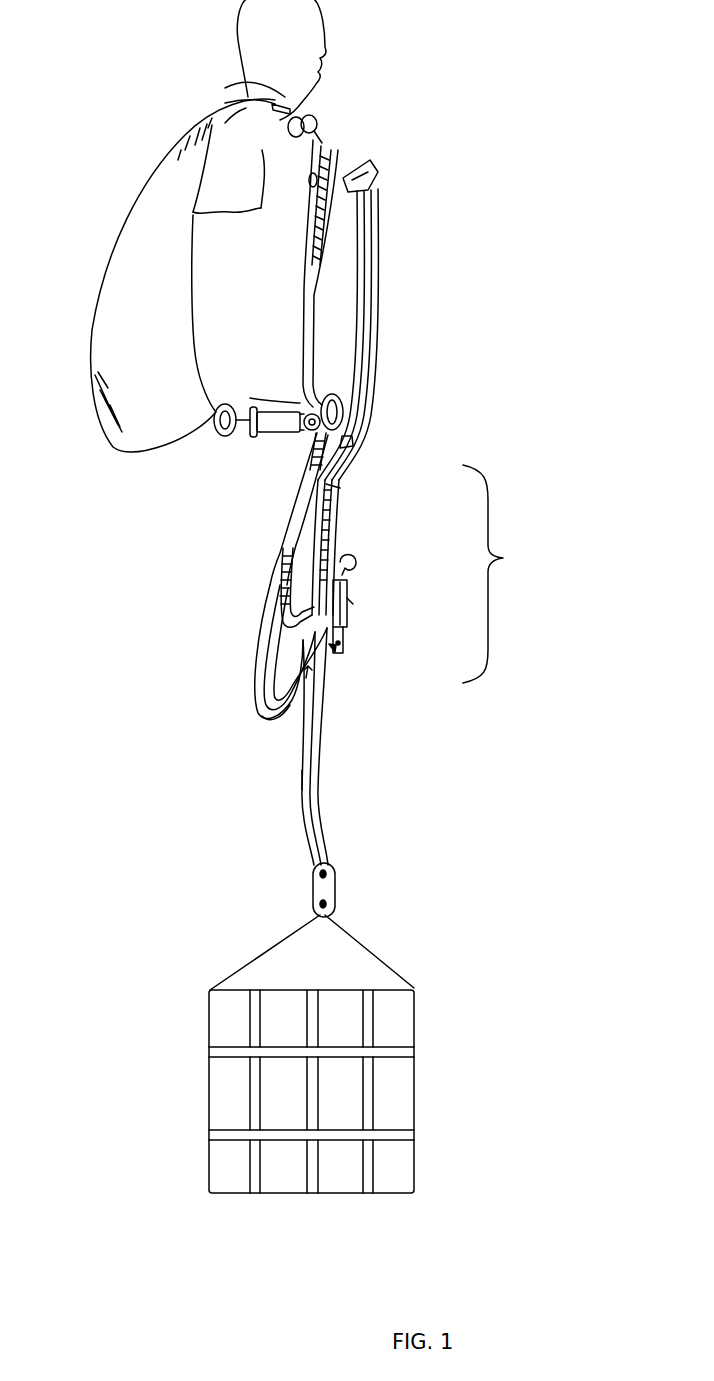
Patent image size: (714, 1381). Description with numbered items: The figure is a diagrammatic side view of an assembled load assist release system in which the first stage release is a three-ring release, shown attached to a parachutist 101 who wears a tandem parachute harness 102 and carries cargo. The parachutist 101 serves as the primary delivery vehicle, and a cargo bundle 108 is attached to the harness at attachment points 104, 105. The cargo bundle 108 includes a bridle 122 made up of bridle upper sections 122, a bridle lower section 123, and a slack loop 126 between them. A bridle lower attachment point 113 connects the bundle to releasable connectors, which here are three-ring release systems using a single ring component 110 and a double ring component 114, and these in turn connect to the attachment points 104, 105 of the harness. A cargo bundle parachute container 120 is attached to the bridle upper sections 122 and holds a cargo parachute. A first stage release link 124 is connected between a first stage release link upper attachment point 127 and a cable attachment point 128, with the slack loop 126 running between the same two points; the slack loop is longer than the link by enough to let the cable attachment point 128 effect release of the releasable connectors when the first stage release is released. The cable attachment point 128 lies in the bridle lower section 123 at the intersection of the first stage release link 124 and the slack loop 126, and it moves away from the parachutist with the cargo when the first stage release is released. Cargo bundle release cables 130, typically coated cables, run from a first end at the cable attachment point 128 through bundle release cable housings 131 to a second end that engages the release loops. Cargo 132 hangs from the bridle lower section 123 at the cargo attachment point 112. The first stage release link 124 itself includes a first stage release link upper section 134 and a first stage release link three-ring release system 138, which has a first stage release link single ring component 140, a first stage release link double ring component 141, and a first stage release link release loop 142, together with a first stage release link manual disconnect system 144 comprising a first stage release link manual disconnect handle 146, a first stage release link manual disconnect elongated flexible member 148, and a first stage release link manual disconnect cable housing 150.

The parachutist 101 is at (232, 33).
The tandem parachute harness 102 is at (92, 324).
The attachment point 104 is at (245, 82).
The attachment point 105 is at (215, 435).
The cargo bundle 108 is at (480, 145).
The single ring component 110 is at (322, 400).
The cargo attachment point 112 is at (337, 893).
The bridle lower attachment point 113 is at (315, 180).
The double ring component 114 is at (250, 398).
The cargo bundle parachute container 120 is at (310, 307).
The bridle upper section 122 is at (327, 808).
The bridle lower section 123 is at (283, 780).
The first stage release link 124 is at (508, 574).
The slack loop 126 is at (252, 662).
The first stage release link upper attachment point 127 is at (352, 440).
The cable attachment point 128 is at (334, 649).
The cargo bundle release cable 130 is at (290, 138).
The bundle release cable housing 131 is at (320, 208).
The cargo 132 is at (427, 1100).
The first stage release link upper section 134 is at (342, 517).
The first stage release link three-ring release system 138 is at (393, 582).
The first stage release link single ring component 140 is at (343, 642).
The first stage release link double ring component 141 is at (353, 603).
The first stage release link release loop 142 is at (357, 562).
The first stage release link manual disconnect system 144 is at (372, 200).
The first stage release link manual disconnect handle 146 is at (385, 168).
The first stage release link manual disconnect elongated flexible member 148 is at (277, 738).
The first stage release link manual disconnect cable housing 150 is at (345, 487).